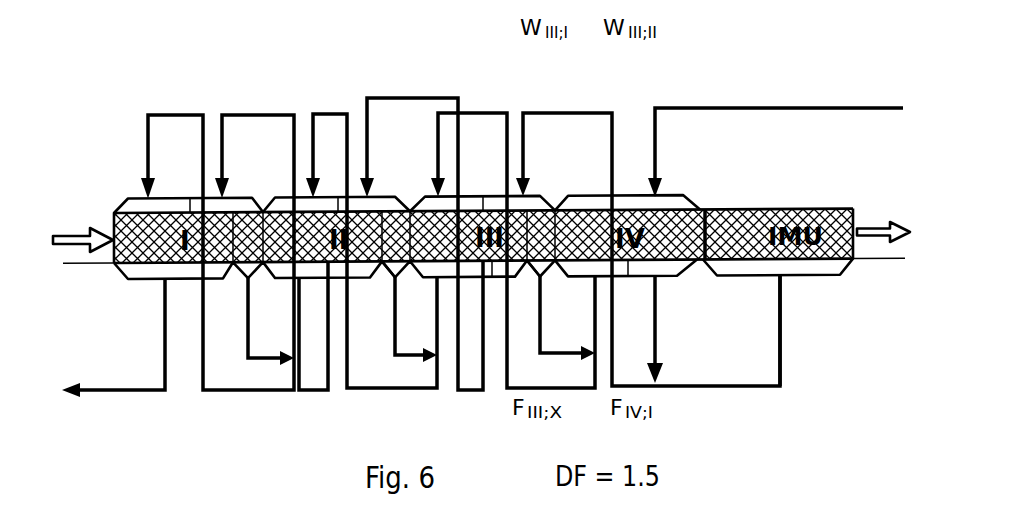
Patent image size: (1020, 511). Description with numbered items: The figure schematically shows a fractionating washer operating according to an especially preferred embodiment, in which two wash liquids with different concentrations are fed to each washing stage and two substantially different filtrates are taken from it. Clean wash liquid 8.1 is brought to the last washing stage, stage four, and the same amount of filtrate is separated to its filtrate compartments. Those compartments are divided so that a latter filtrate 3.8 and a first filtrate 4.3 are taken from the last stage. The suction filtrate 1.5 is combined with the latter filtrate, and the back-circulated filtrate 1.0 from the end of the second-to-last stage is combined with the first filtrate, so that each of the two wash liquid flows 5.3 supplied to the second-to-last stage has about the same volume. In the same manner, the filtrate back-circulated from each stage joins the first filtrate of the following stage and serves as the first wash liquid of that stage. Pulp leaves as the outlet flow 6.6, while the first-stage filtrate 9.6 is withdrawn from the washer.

The wash liquid flow volume 5.3 is at (460, 228).
The clean wash liquid volume 8.1 is at (473, 164).
The product flow M out 6.6 is at (884, 203).
The filtrate outlet F_I from stage I 9.6 is at (113, 338).
The back-circulated filtrate volume 1.0 is at (421, 320).
The first filtrate volume 4.3 is at (486, 289).
The latter filtrate volume 3.8 is at (676, 329).
The suction filtrate volume 1.5 is at (796, 330).